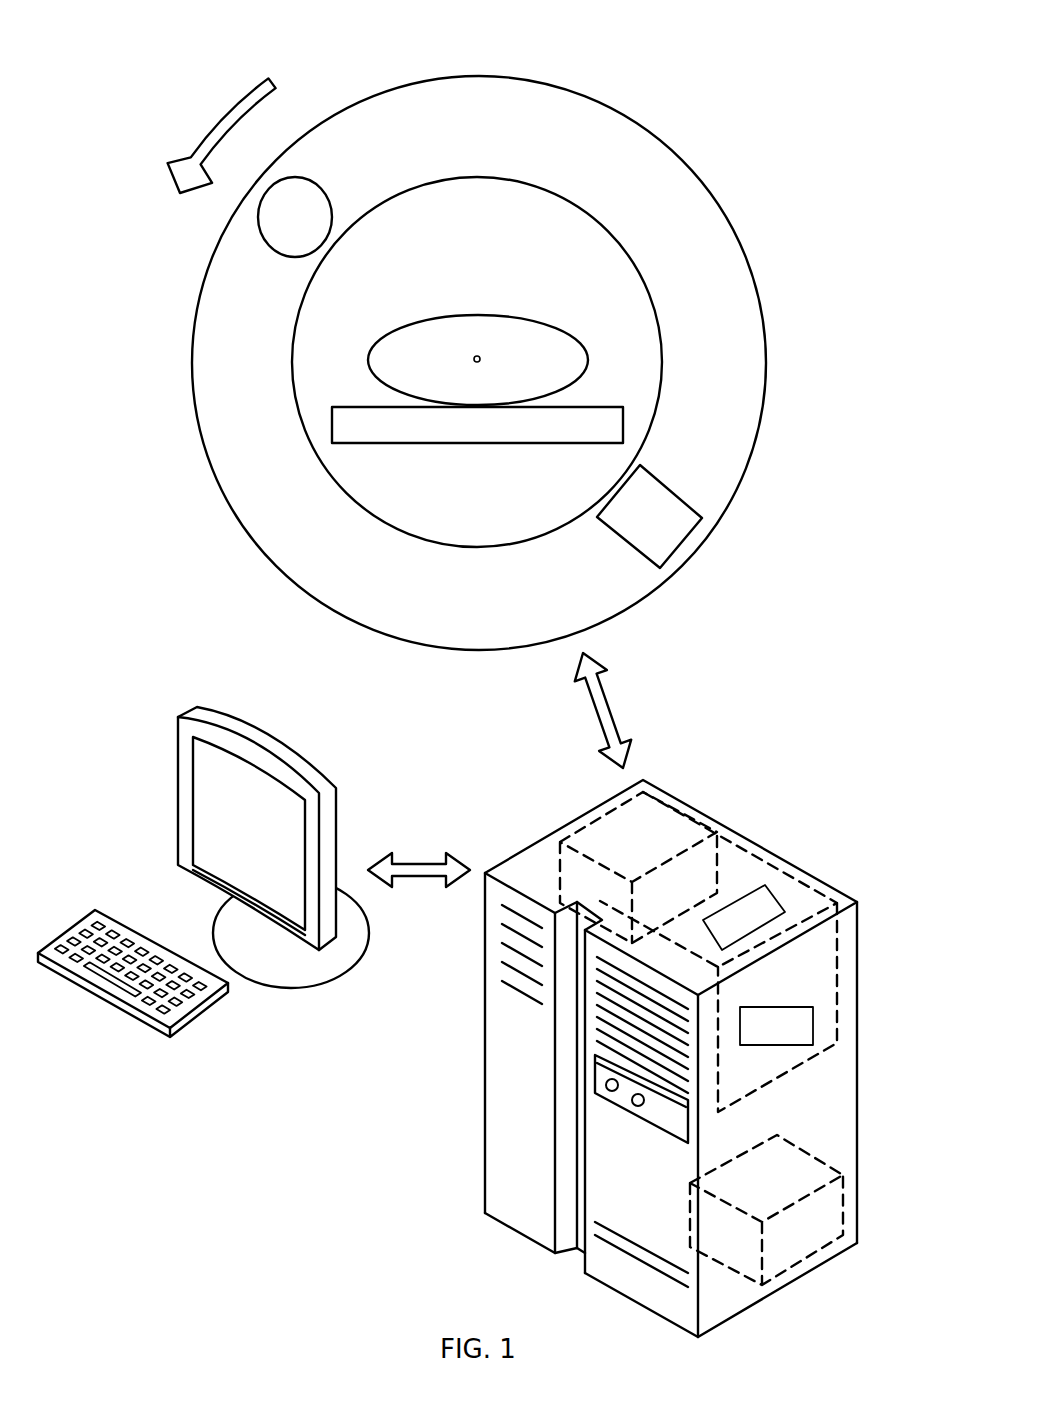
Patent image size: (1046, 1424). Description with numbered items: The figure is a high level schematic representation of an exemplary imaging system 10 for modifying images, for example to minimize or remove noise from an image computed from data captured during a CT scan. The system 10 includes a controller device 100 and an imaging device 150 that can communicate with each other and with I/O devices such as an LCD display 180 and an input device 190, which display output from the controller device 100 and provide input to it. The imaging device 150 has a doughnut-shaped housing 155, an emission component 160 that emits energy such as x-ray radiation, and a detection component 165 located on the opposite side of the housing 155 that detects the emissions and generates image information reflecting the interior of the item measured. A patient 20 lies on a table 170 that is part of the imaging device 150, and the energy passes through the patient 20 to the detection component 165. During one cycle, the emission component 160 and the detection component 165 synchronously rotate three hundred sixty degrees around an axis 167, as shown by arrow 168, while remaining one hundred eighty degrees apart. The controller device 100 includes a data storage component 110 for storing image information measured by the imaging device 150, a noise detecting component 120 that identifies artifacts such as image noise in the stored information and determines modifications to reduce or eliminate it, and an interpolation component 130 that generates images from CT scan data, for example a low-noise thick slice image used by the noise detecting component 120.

The imaging system 10 is at (93, 62).
The doughnut-shaped housing 155 is at (552, 82).
The imaging device 150 is at (708, 132).
The arrow 168 is at (213, 118).
The emission component 160 is at (321, 181).
The patient 20 is at (498, 315).
The axis 167 is at (481, 359).
The table 170 is at (600, 407).
The detection component 165 is at (661, 482).
The LCD display 180 is at (280, 713).
The input device 190 is at (202, 1015).
The controller device 100 is at (671, 1047).
The interpolation component 130 is at (638, 867).
The data storage component 110 is at (718, 952).
The noise detecting component 120 is at (766, 1210).